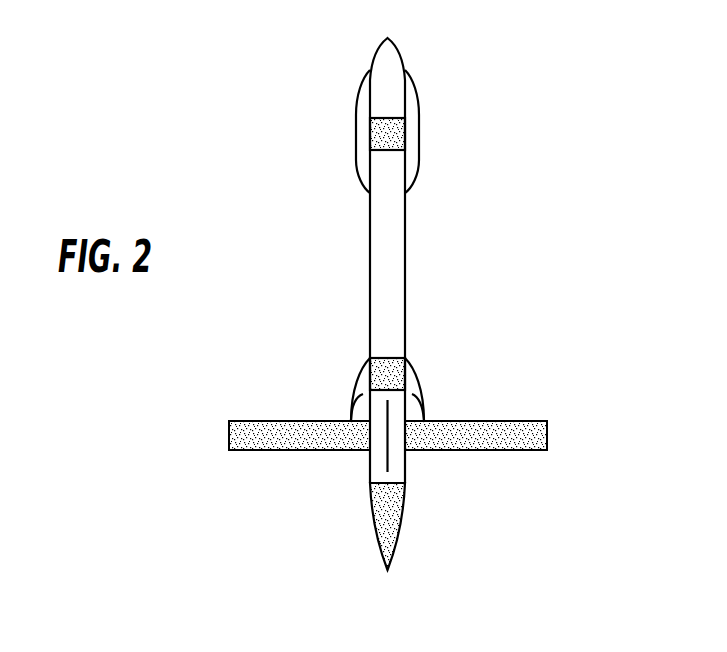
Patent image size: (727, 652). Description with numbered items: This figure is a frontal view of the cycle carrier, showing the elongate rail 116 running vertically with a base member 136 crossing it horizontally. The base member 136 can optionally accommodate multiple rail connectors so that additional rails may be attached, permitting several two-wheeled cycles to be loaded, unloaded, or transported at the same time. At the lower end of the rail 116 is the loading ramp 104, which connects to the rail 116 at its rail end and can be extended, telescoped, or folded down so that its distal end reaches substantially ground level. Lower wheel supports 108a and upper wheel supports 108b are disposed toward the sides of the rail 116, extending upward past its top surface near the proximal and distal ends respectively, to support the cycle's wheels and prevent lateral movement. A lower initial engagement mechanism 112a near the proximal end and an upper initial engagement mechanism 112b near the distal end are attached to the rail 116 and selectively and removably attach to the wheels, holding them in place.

The loading ramp 104 is at (385, 522).
The lower wheel supports 108a is at (412, 396).
The upper wheel supports 108b is at (412, 100).
The lower initial engagement mechanism 112a is at (397, 357).
The upper initial engagement mechanism 112b is at (380, 135).
The rail 116 is at (405, 217).
The base member 136 is at (547, 435).